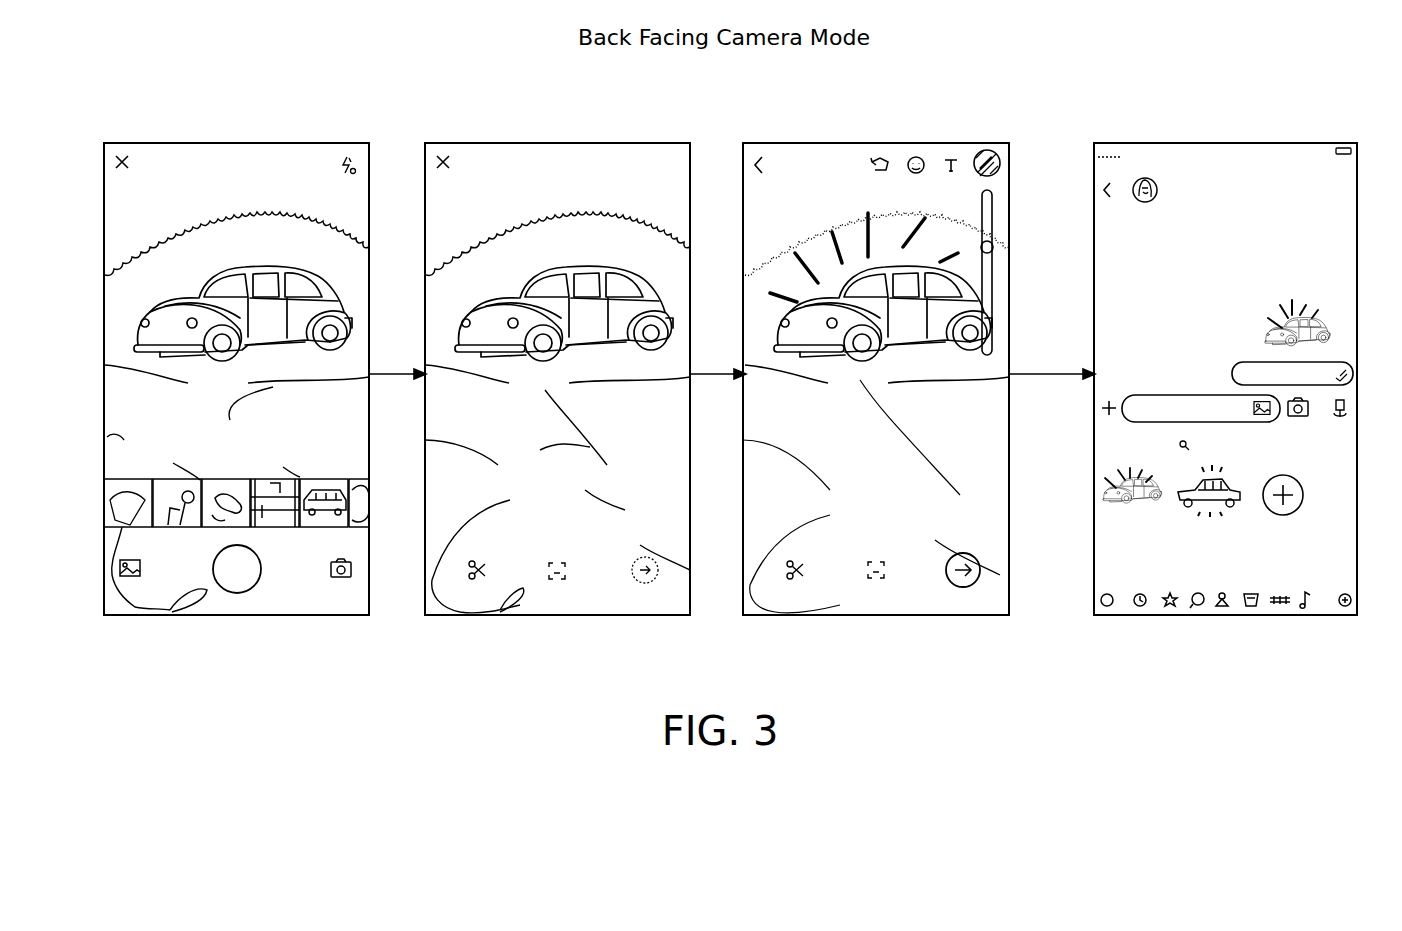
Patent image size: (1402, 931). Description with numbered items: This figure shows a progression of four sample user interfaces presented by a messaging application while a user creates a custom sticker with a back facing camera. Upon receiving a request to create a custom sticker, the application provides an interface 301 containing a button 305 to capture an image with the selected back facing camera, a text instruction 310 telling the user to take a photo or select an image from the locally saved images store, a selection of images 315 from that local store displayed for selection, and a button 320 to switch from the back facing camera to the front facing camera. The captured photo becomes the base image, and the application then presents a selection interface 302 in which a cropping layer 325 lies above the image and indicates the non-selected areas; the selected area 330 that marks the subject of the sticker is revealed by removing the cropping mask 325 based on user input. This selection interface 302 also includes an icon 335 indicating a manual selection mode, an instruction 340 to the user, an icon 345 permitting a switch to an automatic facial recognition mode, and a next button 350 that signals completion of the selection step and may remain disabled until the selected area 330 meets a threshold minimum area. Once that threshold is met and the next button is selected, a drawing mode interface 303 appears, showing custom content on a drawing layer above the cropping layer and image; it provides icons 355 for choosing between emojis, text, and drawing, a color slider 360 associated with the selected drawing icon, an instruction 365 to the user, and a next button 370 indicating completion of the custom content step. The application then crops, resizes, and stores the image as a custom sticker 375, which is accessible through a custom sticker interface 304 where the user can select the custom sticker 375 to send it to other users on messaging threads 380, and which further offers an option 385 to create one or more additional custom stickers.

The interface 301 is at (243, 142).
The selection interface 302 is at (556, 142).
The drawing mode interface 303 is at (873, 142).
The custom sticker interface 304 is at (1188, 142).
The button 305 is at (237, 580).
The text instruction 310 is at (356, 451).
The selection of images 315 is at (348, 503).
The button 320 is at (340, 583).
The cropping layer 325 is at (653, 176).
The selected area 330 is at (495, 322).
The icon 335 is at (477, 584).
The instruction 340 is at (668, 517).
The icon 345 is at (557, 585).
The next button 350 is at (646, 585).
The icons 355 is at (1000, 172).
The color slider 360 is at (994, 293).
The instruction 365 is at (980, 520).
The next button 370 is at (967, 588).
The custom sticker 375 is at (1136, 516).
The messaging threads 380 is at (1200, 257).
The option 385 is at (1282, 520).